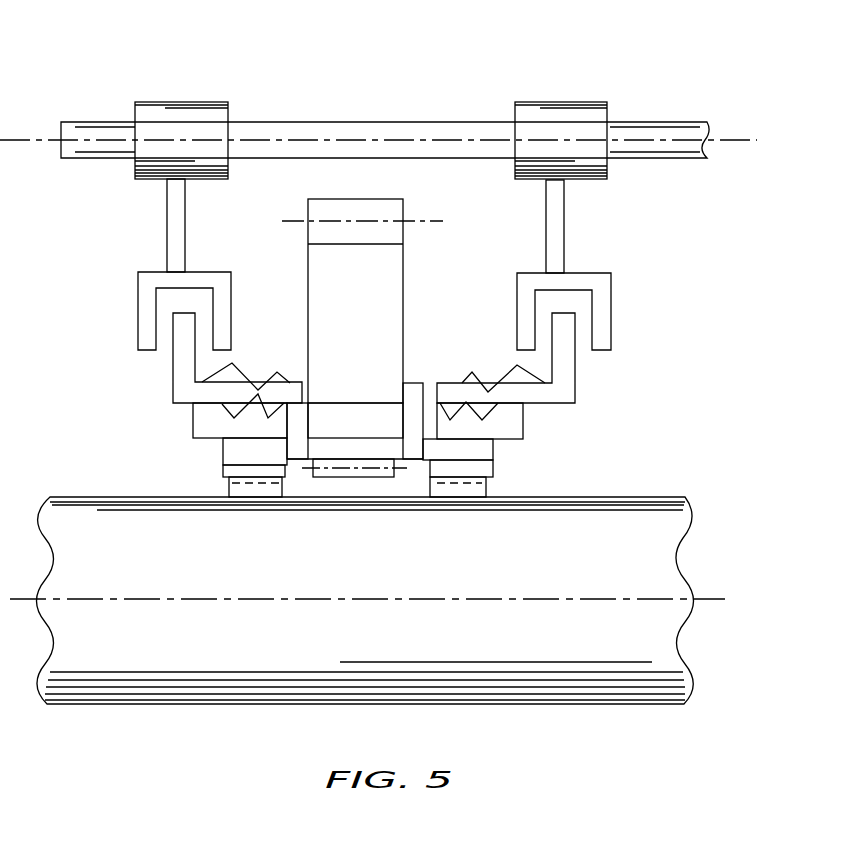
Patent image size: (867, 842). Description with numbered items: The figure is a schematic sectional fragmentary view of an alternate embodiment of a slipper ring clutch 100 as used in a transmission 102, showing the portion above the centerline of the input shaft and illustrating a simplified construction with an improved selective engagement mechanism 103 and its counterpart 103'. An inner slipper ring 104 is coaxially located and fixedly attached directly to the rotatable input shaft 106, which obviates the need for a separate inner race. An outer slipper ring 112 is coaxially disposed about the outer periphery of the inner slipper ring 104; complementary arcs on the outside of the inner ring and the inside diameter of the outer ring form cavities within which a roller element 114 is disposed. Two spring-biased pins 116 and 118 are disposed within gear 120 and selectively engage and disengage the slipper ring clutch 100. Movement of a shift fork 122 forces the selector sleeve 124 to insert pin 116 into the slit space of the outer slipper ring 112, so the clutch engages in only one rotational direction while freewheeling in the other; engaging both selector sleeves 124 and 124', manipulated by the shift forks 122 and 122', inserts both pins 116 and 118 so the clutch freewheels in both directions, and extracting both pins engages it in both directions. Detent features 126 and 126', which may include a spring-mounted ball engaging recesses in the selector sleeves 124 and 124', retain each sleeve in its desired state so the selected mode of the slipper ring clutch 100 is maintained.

The slipper ring clutch 100 is at (325, 425).
The transmission 102 is at (384, 86).
The selective engagement mechanism 103 is at (536, 421).
The selective engagement mechanism 103' is at (201, 420).
The inner slipper ring 104 is at (418, 488).
The input shaft 106 is at (537, 704).
The outer slipper ring 112 is at (432, 448).
The roller element 114 is at (395, 469).
The spring-biased pin 116 is at (415, 383).
The spring-biased pin 118 is at (301, 399).
The gear 120 is at (403, 232).
The shift fork 122 is at (603, 226).
The shift fork 122' is at (127, 225).
The selector sleeve 124 is at (554, 358).
The selector sleeve 124' is at (191, 358).
The detent feature 126 is at (492, 341).
The detent mechanism 126' is at (251, 338).